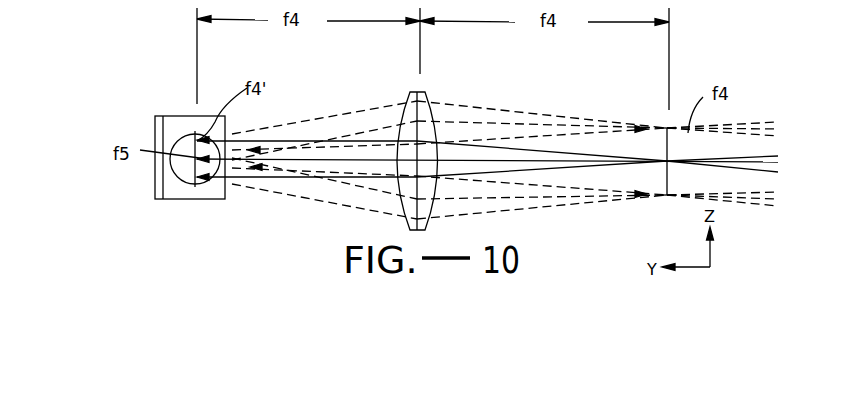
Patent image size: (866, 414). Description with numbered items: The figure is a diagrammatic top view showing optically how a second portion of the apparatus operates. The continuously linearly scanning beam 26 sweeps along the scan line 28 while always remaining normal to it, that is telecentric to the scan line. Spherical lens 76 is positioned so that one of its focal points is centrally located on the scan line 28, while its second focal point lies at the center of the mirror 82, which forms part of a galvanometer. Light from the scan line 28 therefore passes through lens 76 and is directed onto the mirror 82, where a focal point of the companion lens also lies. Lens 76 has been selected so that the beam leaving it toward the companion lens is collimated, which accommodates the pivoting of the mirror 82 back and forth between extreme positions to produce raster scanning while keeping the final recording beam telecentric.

The mirror 82 is at (202, 197).
The spherical lens 76 is at (428, 95).
The scan line 28 is at (668, 138).
The continuously linearly scanning beam 26 is at (747, 160).